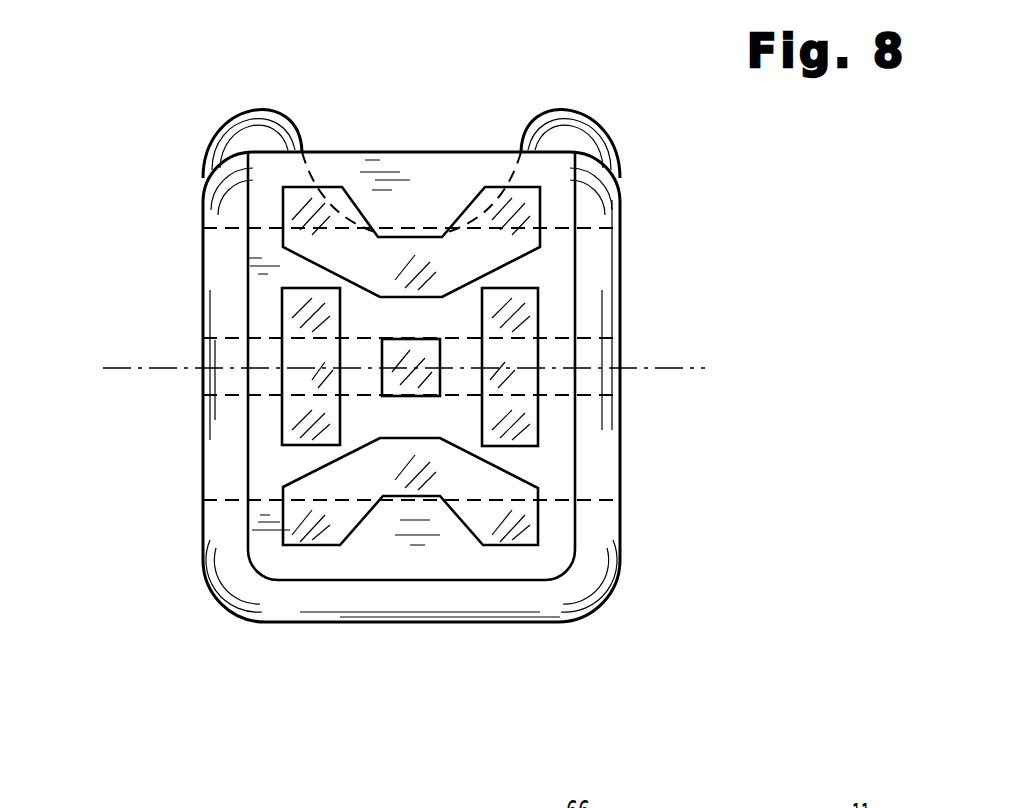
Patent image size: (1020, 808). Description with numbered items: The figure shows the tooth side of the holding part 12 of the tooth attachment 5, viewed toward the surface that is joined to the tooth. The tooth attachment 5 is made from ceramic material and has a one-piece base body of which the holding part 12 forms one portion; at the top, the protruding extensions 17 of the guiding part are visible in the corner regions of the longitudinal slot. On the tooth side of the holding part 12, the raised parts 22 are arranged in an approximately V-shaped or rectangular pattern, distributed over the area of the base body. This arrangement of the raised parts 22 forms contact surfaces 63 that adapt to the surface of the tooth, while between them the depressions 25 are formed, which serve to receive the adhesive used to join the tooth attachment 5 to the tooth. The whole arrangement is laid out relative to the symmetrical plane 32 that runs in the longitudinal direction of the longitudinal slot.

The tooth attachment 5 is at (135, 155).
The holding part 12 is at (272, 168).
The protruding extensions 17 is at (553, 133).
The raised parts 22 is at (512, 212).
The depressions 25 is at (383, 421).
The symmetrical plane 32 is at (113, 367).
The contact surface 63 is at (433, 258).